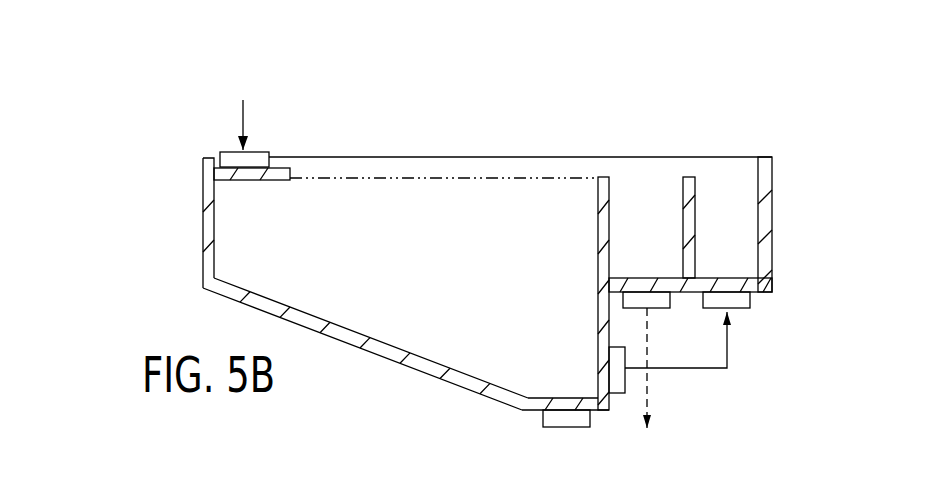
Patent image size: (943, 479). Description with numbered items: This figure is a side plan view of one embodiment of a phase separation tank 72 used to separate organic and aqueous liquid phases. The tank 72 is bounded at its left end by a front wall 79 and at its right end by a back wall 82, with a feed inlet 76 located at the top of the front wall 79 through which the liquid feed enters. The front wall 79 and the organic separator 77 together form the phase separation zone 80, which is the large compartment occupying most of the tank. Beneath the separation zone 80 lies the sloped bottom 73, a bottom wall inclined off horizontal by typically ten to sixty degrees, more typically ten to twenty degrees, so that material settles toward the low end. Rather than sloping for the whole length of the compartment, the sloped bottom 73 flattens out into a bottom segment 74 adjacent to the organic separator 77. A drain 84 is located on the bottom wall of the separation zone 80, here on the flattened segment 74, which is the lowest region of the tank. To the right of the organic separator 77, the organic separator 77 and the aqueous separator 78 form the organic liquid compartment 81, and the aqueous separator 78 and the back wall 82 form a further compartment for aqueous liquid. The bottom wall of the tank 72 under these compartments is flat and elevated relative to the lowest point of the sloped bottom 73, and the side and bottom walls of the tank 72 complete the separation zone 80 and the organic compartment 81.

The phase separation tank 72 is at (717, 72).
The sloped bottom 73 is at (422, 372).
The flattened bottom segment 74 is at (600, 410).
The feed inlet 76 is at (257, 150).
The organic separator 77 is at (603, 175).
The aqueous separator 78 is at (689, 177).
The front wall 79 is at (203, 193).
The phase separation zone 80 is at (403, 190).
The organic liquid compartment 81 is at (652, 180).
The back wall 82 is at (765, 157).
The drain 84 is at (567, 427).